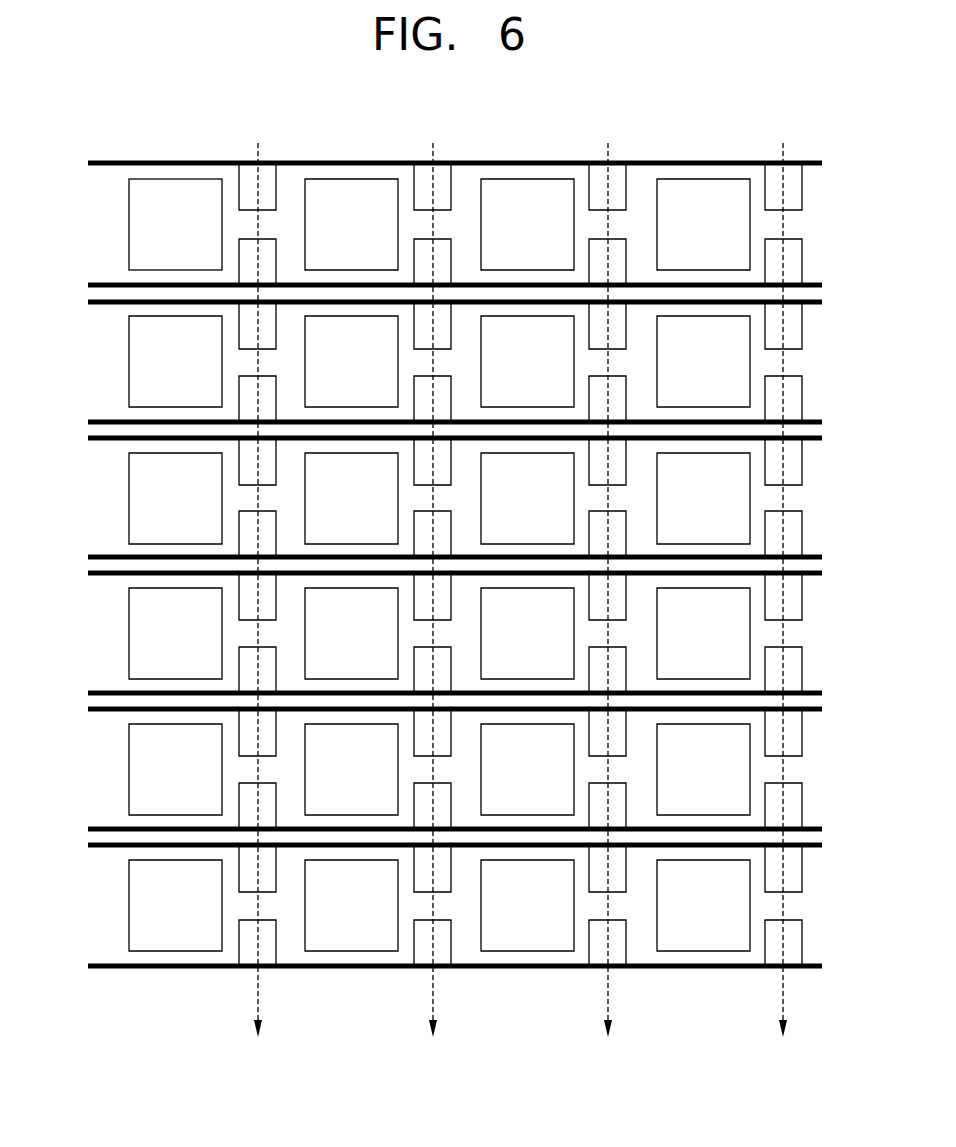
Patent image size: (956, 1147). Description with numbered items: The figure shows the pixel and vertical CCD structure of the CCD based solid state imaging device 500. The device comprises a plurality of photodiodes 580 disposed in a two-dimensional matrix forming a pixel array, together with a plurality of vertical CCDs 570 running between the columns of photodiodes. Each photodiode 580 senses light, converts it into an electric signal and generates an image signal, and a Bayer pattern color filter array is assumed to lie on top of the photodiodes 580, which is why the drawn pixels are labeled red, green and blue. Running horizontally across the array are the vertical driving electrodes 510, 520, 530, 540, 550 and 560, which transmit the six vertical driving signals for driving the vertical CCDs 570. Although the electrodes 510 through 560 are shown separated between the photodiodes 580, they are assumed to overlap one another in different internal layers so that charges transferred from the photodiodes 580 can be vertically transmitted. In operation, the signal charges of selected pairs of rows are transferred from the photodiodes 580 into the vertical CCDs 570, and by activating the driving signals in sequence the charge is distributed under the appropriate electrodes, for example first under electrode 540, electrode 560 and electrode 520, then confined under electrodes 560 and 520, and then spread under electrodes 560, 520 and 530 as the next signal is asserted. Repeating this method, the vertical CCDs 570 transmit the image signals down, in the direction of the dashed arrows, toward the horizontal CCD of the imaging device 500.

The solid state imaging device 500 is at (444, 558).
The vertical driving electrode 510 is at (813, 283).
The vertical driving electrode 520 is at (813, 556).
The vertical driving electrode 530 is at (815, 305).
The vertical driving electrode 540 is at (813, 420).
The vertical driving electrode 550 is at (813, 692).
The vertical driving electrode 560 is at (815, 441).
The vertical CCD 570 is at (782, 1007).
The photodiode 580 is at (143, 224).